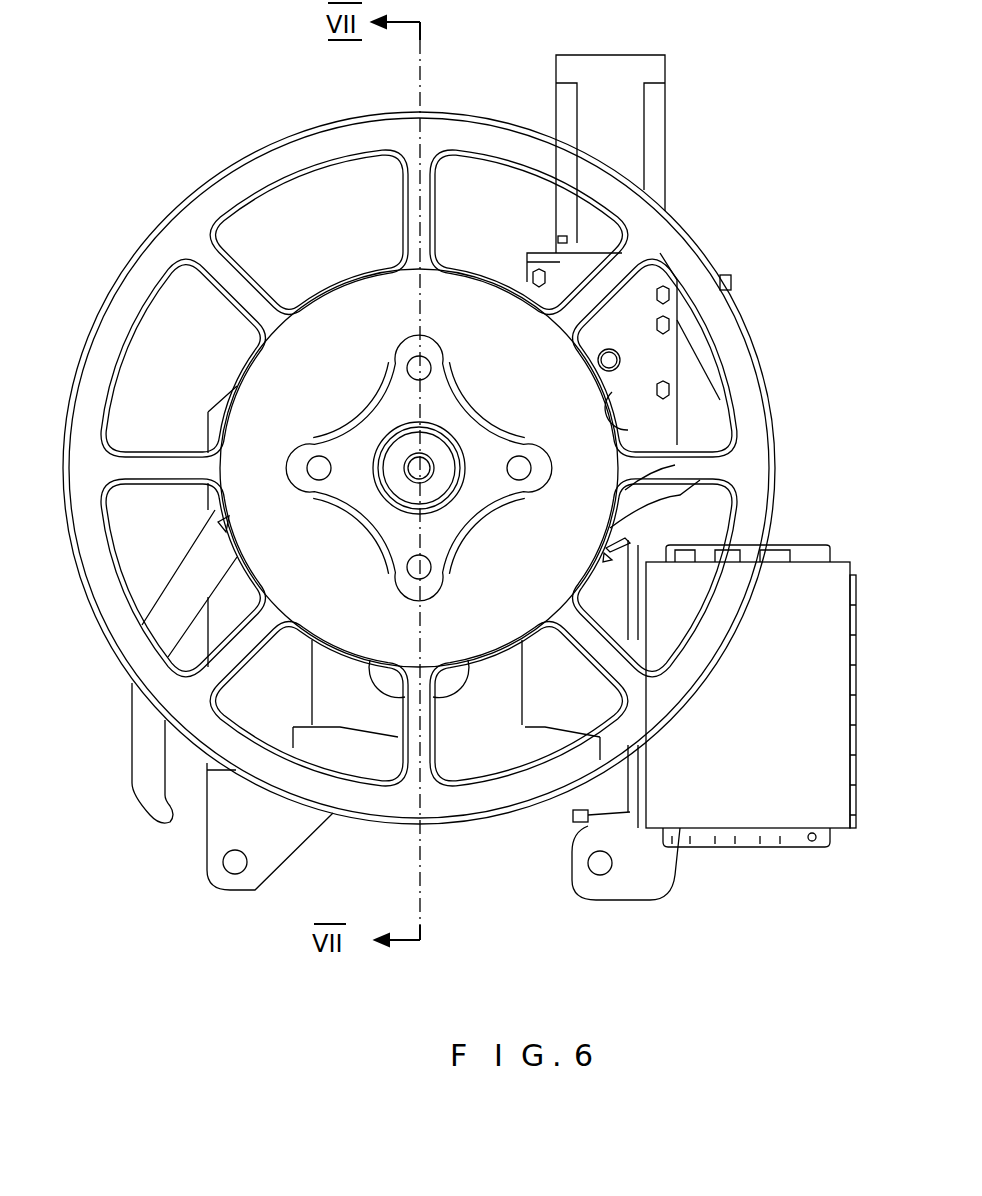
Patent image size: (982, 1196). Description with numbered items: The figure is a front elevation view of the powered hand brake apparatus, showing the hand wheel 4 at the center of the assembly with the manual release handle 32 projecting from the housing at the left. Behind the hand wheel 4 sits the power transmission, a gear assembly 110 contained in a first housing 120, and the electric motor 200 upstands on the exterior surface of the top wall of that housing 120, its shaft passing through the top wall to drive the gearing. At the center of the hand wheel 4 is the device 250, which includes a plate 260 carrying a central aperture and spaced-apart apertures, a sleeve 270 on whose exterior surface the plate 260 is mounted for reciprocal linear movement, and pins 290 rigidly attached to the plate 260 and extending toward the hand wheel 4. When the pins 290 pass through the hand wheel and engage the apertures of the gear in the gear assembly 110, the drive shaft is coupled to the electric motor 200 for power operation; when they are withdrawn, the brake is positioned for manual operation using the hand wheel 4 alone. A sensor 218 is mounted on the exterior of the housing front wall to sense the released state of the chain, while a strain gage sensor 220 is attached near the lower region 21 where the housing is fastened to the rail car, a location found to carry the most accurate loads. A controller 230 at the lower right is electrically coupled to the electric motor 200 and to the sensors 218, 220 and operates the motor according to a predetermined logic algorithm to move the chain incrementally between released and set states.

The hand wheel 4 is at (187, 200).
The electric motor 200 is at (668, 79).
The gear assembly 110 is at (722, 254).
The first housing 120 is at (677, 350).
The sensor 218 is at (608, 545).
The device 250 is at (419, 468).
The plate 260 is at (450, 418).
The sleeve 270 is at (452, 487).
The pins 290 is at (412, 568).
The release handle 32 is at (150, 752).
The sensor 220 is at (577, 823).
The mounting foot 21 is at (640, 860).
The controller 230 is at (775, 876).